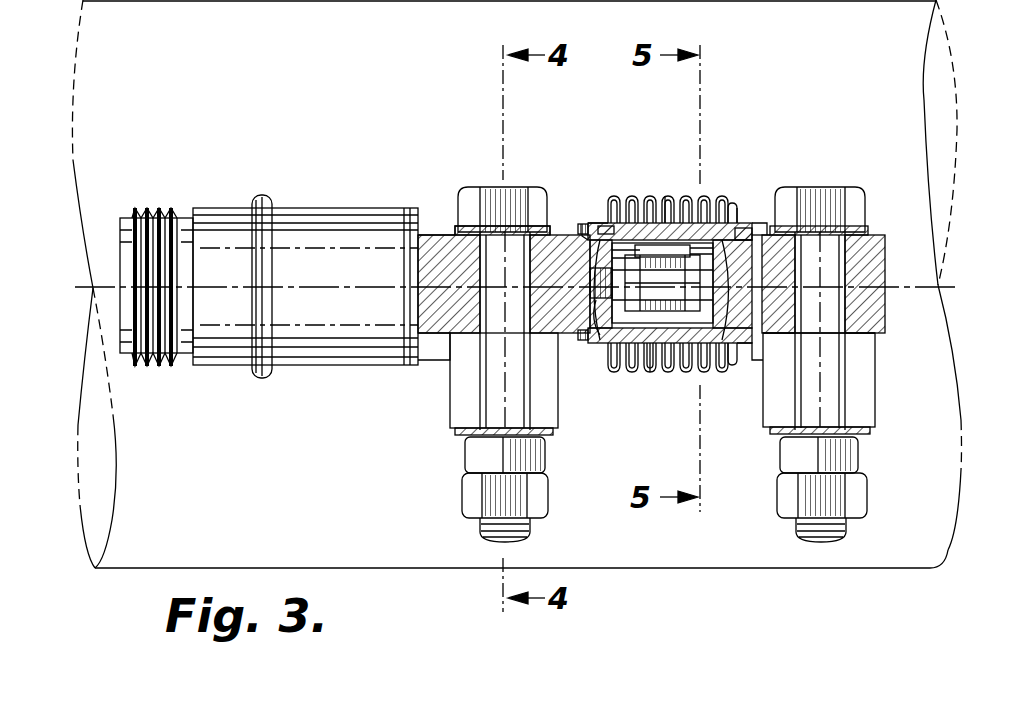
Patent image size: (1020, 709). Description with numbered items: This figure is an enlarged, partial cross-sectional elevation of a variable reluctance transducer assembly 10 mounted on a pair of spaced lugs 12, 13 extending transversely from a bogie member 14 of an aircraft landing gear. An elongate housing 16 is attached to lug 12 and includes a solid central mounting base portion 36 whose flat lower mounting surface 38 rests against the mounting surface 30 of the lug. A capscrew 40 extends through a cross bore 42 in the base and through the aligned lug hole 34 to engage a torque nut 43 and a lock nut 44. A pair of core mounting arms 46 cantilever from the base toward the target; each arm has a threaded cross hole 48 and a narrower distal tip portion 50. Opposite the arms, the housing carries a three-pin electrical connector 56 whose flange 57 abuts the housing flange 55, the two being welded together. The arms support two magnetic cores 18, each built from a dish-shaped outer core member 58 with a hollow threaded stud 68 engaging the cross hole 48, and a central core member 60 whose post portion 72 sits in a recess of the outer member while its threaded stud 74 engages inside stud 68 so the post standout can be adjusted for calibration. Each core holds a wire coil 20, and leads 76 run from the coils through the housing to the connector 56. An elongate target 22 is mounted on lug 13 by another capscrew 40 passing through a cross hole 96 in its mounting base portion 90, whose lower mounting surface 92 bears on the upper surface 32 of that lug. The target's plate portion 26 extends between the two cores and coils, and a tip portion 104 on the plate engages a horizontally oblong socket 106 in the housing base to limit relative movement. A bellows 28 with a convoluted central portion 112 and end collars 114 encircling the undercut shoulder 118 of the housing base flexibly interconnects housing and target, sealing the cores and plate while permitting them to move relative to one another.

The variable reluctance transducer assembly 10 is at (598, 105).
The lug 12 is at (455, 400).
The lug 13 is at (872, 400).
The bogie member 14 is at (70, 0).
The housing 16 is at (418, 165).
The magnetic core 18 is at (597, 243).
The wire coil 20 is at (735, 220).
The target 22 is at (778, 180).
The plate portion 26 is at (740, 345).
The bellows 28 is at (730, 178).
The mounting surface 30 is at (445, 315).
The upper surface 32 is at (870, 315).
The lug hole 34 is at (500, 420).
The mounting base portion 36 is at (445, 238).
The lower mounting surface 38 is at (440, 340).
The capscrew 40 is at (488, 210).
The cross bore 42 is at (470, 262).
The torque nut 43 is at (465, 455).
The lock nut 44 is at (462, 500).
The core mounting arm 46 is at (650, 222).
The threaded cross hole 48 is at (693, 248).
The distal tip portion 50 is at (705, 332).
The flange 55 is at (276, 200).
The electrical connector 56 is at (205, 210).
The flange 57 is at (256, 196).
The outer core member 58 is at (610, 228).
The central core member 60 is at (640, 312).
The stud 68 is at (652, 245).
The post portion 72 is at (633, 250).
The threaded stud 74 is at (668, 222).
The lead 76 is at (650, 372).
The mounting base portion 90 is at (875, 240).
The lower mounting surface 92 is at (860, 340).
The cross hole 96 is at (828, 282).
The tip portion 104 is at (610, 330).
The socket 106 is at (603, 335).
The convoluted central portion 112 is at (710, 225).
The end collar 114 is at (605, 222).
The undercut shoulder 118 is at (585, 226).